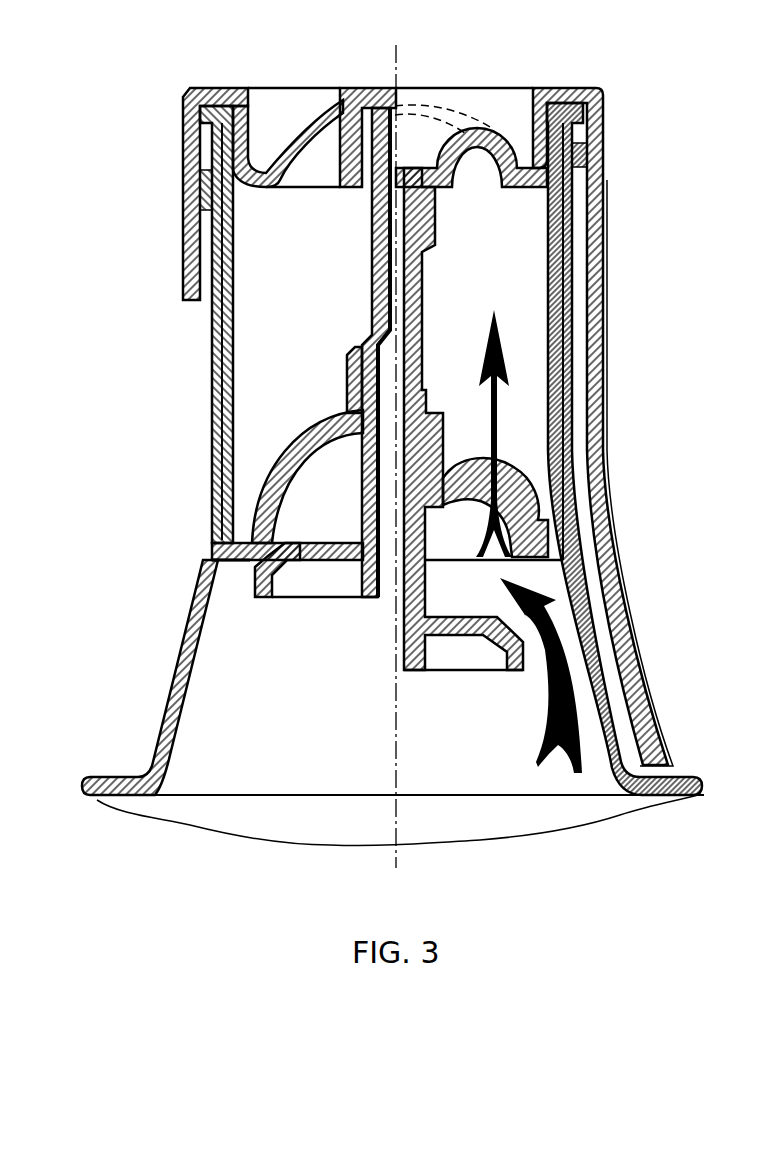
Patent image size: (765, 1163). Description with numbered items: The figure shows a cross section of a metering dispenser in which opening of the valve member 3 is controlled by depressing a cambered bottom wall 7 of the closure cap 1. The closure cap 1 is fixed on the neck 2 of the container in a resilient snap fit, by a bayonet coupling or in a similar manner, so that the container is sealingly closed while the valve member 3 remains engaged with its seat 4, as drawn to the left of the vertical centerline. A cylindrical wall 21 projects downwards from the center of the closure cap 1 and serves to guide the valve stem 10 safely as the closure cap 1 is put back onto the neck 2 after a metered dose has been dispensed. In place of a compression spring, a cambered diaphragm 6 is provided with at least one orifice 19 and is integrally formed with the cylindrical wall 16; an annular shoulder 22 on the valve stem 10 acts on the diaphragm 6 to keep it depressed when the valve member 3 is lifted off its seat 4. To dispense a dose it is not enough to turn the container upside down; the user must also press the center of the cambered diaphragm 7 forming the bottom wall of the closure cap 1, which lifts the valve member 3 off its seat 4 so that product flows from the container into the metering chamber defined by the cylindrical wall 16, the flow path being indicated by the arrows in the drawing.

The closure cap 1 is at (590, 367).
The neck 2 is at (213, 353).
The valve member 3 is at (257, 578).
The seat 4 is at (232, 553).
The cambered diaphragm 6 is at (277, 470).
The cambered bottom wall 7 is at (296, 118).
The valve stem 10 is at (372, 275).
The cylindrical wall 16 is at (553, 338).
The orifice 19 is at (523, 490).
The cylindrical wall 21 is at (346, 112).
The annular shoulder 22 is at (362, 337).